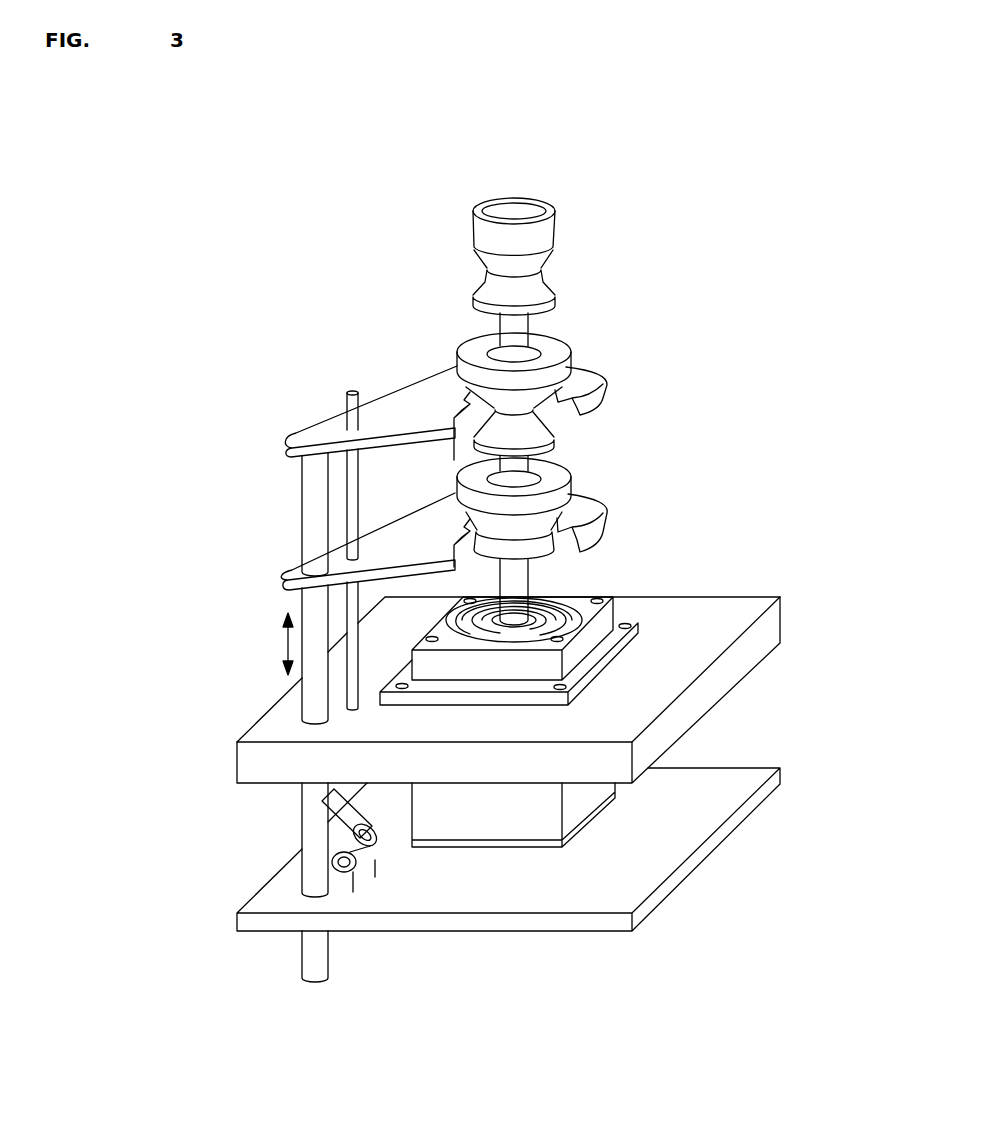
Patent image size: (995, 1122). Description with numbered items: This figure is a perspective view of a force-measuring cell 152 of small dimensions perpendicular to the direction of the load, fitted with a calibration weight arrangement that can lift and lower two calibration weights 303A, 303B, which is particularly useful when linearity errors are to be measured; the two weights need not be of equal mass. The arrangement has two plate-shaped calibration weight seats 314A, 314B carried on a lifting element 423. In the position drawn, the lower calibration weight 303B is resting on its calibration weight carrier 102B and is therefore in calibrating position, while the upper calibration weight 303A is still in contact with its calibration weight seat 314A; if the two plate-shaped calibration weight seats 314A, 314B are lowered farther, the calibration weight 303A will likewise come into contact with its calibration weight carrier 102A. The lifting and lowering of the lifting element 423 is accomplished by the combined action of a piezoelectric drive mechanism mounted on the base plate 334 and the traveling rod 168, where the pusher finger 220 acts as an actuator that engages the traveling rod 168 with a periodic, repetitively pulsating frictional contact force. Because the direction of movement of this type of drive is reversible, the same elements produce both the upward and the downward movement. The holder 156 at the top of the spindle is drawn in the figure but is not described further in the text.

The spindle holder cup 156 is at (518, 327).
The calibration weight 303A is at (557, 353).
The calibration weight 303B is at (553, 498).
The calibration weight carrier 102A is at (522, 437).
The calibration weight carrier 102B is at (537, 540).
The plate-shaped calibration weight seat 314A is at (407, 405).
The plate-shaped calibration weight seat 314B is at (400, 545).
The lifting element 423 is at (245, 512).
The force-measuring cell 152 is at (675, 515).
The traveling rod 168 is at (315, 702).
The pusher finger 220 is at (330, 817).
The base plate 334 is at (643, 865).